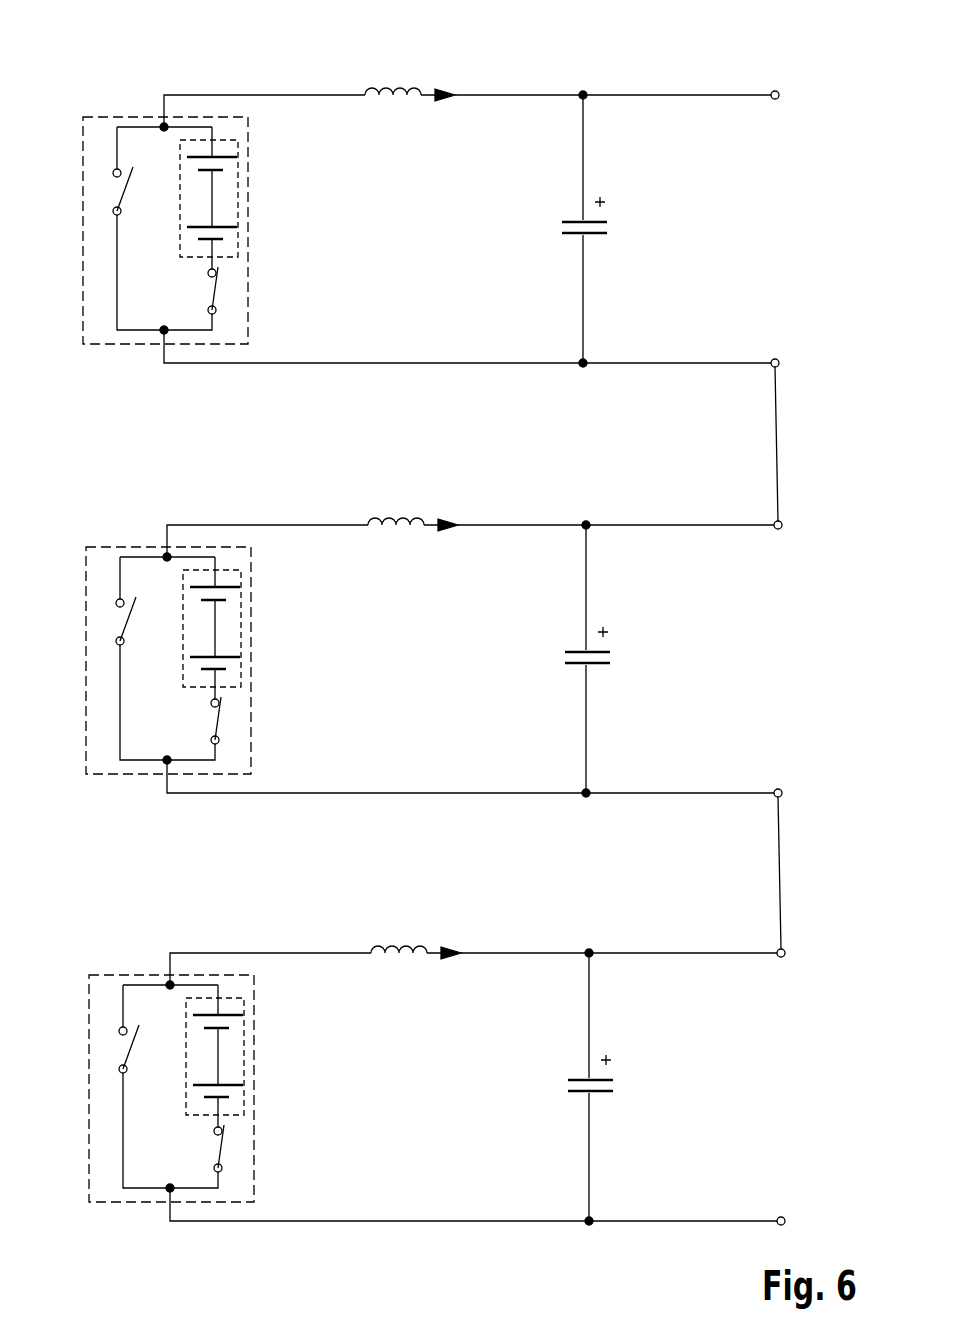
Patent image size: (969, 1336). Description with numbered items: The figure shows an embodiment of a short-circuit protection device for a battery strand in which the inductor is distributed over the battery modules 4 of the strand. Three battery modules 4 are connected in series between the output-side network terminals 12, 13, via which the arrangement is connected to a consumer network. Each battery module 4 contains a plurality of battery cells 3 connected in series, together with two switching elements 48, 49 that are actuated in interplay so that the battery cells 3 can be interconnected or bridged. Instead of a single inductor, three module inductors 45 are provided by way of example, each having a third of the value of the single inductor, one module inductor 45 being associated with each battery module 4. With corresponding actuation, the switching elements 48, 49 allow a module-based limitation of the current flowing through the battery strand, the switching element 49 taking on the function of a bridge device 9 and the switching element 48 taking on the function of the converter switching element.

The battery cell 3 is at (238, 158).
The battery module 4 is at (173, 625).
The bridge device 9 is at (607, 230).
The network terminal 12 is at (781, 95).
The network terminal 13 is at (787, 1221).
The module inductor 45 is at (406, 90).
The switching element 48 is at (218, 283).
The switching element 49 is at (113, 186).